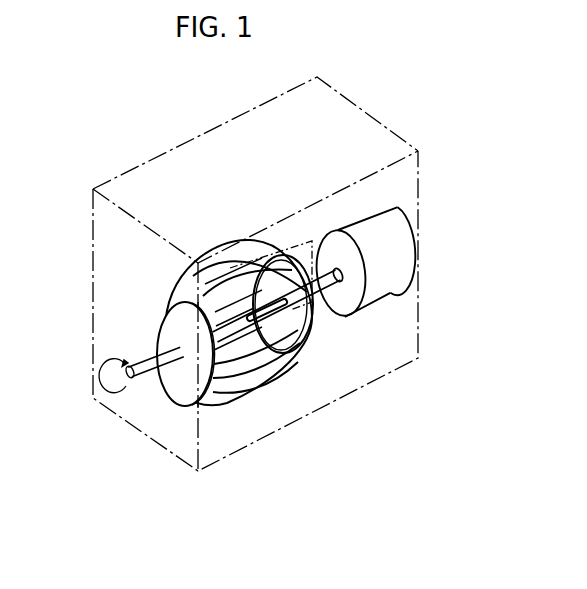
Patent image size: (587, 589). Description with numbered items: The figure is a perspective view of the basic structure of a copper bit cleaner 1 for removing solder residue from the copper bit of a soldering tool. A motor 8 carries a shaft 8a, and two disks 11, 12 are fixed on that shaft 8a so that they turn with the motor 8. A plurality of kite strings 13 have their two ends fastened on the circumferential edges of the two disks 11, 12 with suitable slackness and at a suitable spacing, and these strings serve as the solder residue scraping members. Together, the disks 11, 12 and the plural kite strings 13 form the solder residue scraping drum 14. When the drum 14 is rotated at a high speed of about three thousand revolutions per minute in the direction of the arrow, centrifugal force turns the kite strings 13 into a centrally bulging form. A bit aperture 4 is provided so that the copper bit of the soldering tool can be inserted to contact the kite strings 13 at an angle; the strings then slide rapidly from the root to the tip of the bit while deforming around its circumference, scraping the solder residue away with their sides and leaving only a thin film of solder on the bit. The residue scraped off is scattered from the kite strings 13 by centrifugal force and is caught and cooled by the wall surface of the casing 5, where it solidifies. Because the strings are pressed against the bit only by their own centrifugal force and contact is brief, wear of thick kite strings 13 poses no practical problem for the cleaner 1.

The copper bit cleaner 1 is at (72, 184).
The bit aperture 4 is at (294, 248).
The casing 5 is at (385, 123).
The motor 8 is at (405, 246).
The shaft 8a is at (341, 283).
The disk 11 is at (180, 386).
The disk 12 is at (300, 345).
The kite strings 13 is at (253, 358).
The solder residue scraping drum 14 is at (225, 420).